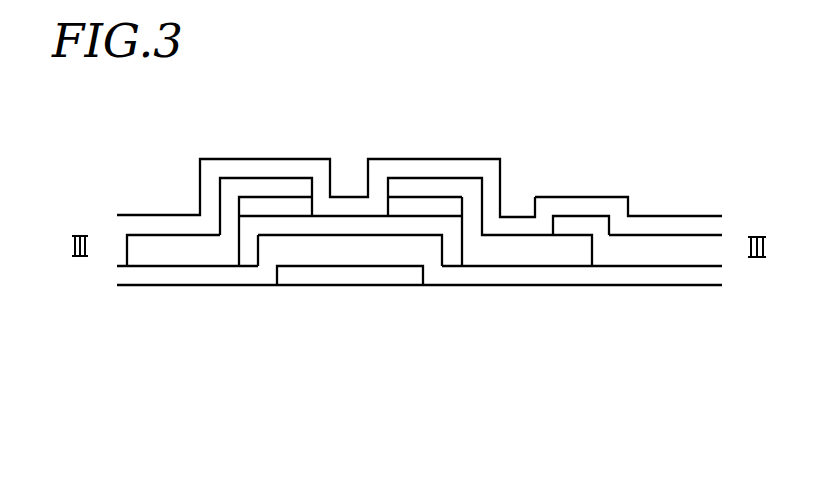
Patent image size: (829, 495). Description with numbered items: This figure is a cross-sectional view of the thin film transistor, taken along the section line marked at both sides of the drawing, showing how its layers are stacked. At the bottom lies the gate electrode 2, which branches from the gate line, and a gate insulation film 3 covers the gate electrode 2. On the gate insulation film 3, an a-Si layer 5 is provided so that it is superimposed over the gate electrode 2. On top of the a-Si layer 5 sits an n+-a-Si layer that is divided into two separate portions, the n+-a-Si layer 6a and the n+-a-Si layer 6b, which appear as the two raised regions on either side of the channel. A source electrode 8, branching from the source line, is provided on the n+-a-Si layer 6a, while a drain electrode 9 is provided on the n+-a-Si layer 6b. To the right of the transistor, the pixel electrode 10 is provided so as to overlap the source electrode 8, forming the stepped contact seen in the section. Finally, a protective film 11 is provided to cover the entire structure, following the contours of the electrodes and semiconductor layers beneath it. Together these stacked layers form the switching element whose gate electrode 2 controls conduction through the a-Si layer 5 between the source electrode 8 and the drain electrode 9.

The gate electrode 2 is at (352, 280).
The gate insulation film 3 is at (473, 278).
The a-Si layer 5 is at (348, 208).
The n+-a-Si layer 6a is at (287, 207).
The n+-a-Si layer 6b is at (418, 205).
The source electrode 8 is at (240, 185).
The drain electrode 9 is at (472, 213).
The pixel electrode 10 is at (678, 248).
The protective film 11 is at (599, 207).